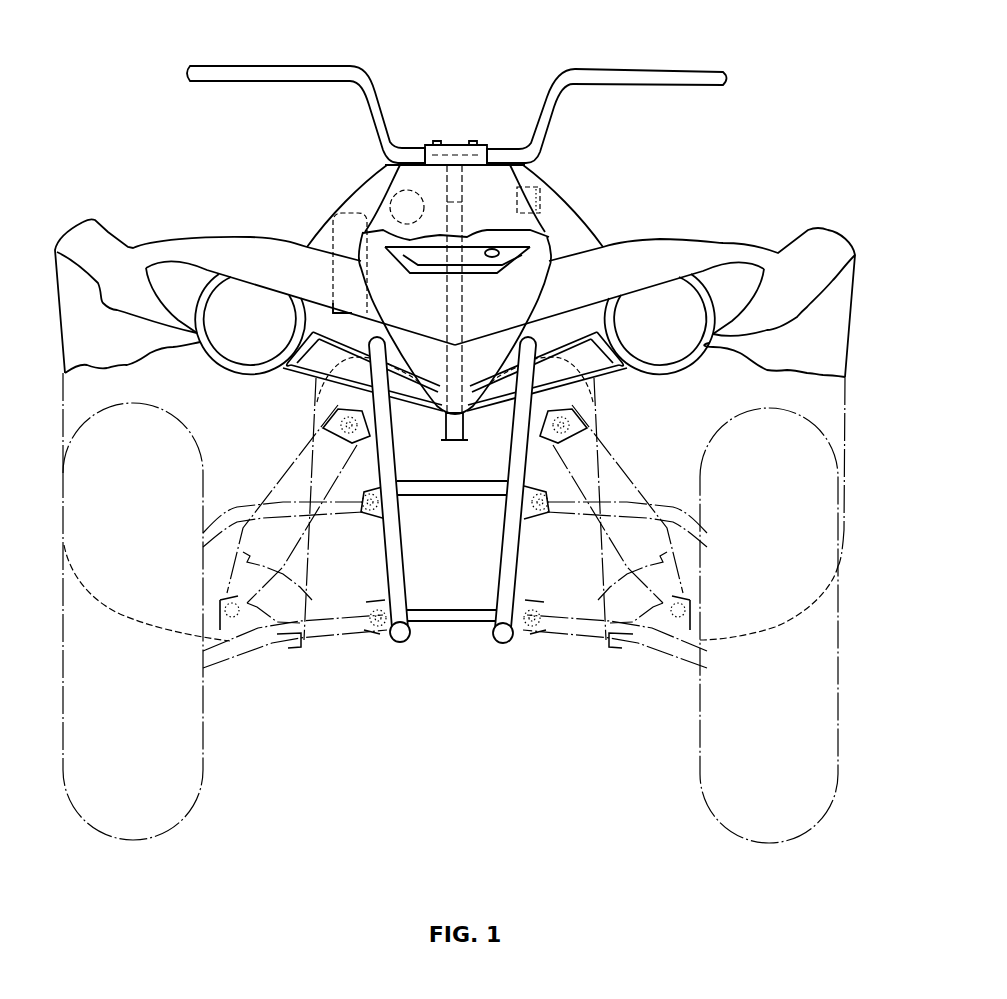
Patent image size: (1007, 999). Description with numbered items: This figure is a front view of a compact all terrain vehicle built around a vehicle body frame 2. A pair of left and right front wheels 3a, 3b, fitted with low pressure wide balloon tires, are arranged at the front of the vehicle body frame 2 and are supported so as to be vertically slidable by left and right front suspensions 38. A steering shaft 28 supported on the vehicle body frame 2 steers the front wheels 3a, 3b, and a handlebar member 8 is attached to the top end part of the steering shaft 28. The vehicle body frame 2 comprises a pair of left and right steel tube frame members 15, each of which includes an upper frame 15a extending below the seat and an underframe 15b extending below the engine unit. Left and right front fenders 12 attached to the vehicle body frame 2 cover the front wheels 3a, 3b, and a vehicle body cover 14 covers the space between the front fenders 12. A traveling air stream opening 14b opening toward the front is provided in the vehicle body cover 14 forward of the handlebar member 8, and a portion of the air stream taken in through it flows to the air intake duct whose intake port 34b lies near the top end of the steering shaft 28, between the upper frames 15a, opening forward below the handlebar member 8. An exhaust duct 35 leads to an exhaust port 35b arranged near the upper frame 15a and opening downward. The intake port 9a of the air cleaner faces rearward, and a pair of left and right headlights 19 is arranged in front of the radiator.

The vehicle body frame 2 is at (544, 457).
The front wheel 3a is at (700, 742).
The front wheel 3b is at (207, 742).
The handlebar member 8 is at (630, 68).
The intake port 9a is at (540, 200).
The front fender 12 is at (136, 246).
The vehicle body cover 14 is at (583, 231).
The traveling air stream opening 14b is at (507, 247).
The frame member 15 is at (374, 552).
The upper frame 15a is at (318, 377).
The underframe 15b is at (390, 640).
The headlight 19 is at (233, 365).
The steering shaft 28 is at (467, 187).
The intake port 34b is at (390, 200).
The exhaust duct 35 is at (327, 267).
The exhaust port 35b is at (333, 314).
The front suspension 38 is at (289, 659).